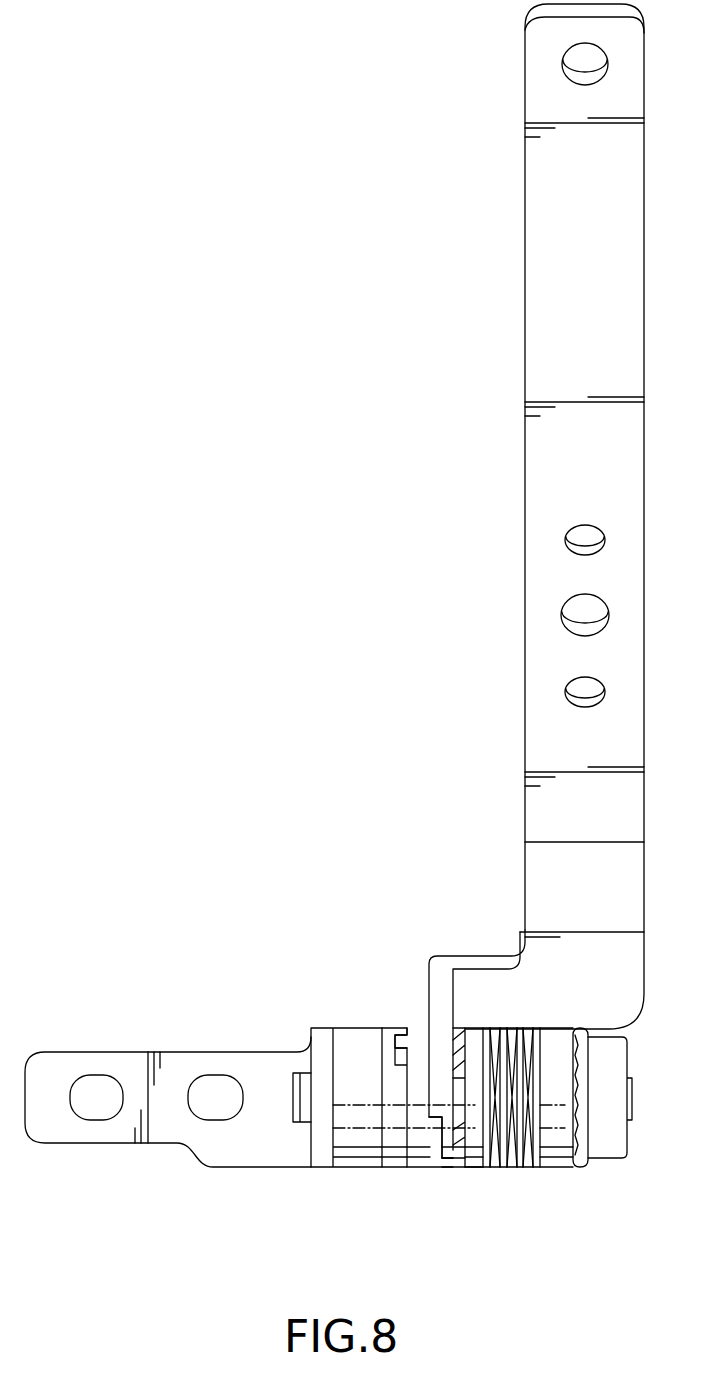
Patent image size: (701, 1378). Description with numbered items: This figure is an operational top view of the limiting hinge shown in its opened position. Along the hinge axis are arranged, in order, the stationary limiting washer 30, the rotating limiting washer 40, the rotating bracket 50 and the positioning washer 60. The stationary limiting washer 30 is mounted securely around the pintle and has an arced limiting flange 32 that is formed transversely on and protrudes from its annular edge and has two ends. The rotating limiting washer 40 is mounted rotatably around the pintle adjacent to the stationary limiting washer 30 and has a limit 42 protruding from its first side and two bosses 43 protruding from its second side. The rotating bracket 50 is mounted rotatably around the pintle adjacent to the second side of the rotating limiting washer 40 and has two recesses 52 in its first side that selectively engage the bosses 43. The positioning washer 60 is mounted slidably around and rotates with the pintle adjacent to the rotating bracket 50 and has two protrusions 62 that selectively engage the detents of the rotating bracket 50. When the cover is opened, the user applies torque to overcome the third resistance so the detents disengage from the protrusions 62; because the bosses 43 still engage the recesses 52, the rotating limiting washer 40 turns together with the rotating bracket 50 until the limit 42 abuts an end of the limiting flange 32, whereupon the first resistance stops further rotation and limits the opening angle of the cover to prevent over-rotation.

The stationary limiting washer 30 is at (390, 1085).
The limiting flange 32 is at (388, 1032).
The rotating limiting washer 40 is at (420, 1162).
The limit 42 is at (402, 1040).
The boss 43 is at (432, 1150).
The rotating bracket 50 is at (443, 962).
The recess 52 is at (453, 1152).
The positioning washer 60 is at (483, 1127).
The protrusion 62 is at (460, 1048).